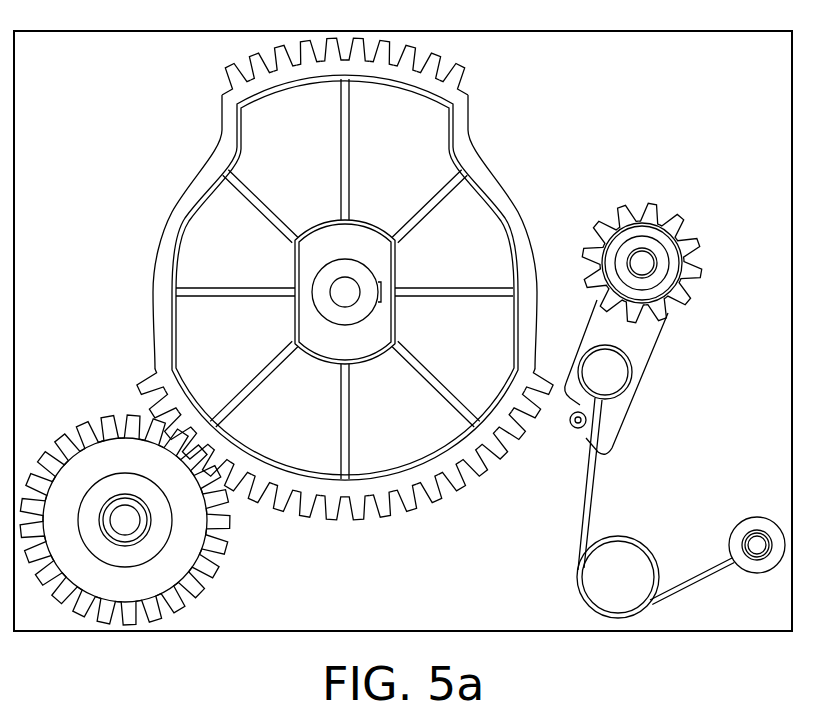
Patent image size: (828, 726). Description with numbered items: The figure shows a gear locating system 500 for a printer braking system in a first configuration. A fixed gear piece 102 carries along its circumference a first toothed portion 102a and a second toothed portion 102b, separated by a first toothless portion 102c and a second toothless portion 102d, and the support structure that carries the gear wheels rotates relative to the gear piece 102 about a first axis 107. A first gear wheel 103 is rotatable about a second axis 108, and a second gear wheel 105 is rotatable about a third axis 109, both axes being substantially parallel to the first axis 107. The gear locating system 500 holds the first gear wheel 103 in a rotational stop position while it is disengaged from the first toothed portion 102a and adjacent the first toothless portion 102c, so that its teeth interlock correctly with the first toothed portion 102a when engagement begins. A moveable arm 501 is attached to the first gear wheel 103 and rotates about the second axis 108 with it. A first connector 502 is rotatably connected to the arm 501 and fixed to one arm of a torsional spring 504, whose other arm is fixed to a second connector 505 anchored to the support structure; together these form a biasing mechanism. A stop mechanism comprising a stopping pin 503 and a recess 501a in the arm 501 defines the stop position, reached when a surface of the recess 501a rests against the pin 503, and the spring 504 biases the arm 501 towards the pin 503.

The gear piece 102 is at (255, 143).
The first toothed portion 102a is at (222, 88).
The second toothed portion 102b is at (383, 492).
The first toothless portion 102c is at (510, 190).
The second toothless portion 102d is at (167, 217).
The first axis of rotation 107 is at (340, 293).
The first gear wheel 103 is at (660, 216).
The second axis of rotation 108 is at (642, 263).
The second gear wheel 105 is at (184, 535).
The third axis of rotation 109 is at (125, 518).
The gear locating system 500 is at (650, 459).
The moveable arm 501 is at (640, 337).
The recess 501a is at (570, 421).
The first connector 502 is at (610, 372).
The stopping pin 503 is at (592, 437).
The torsional spring 504 is at (632, 537).
The second connector 505 is at (753, 517).